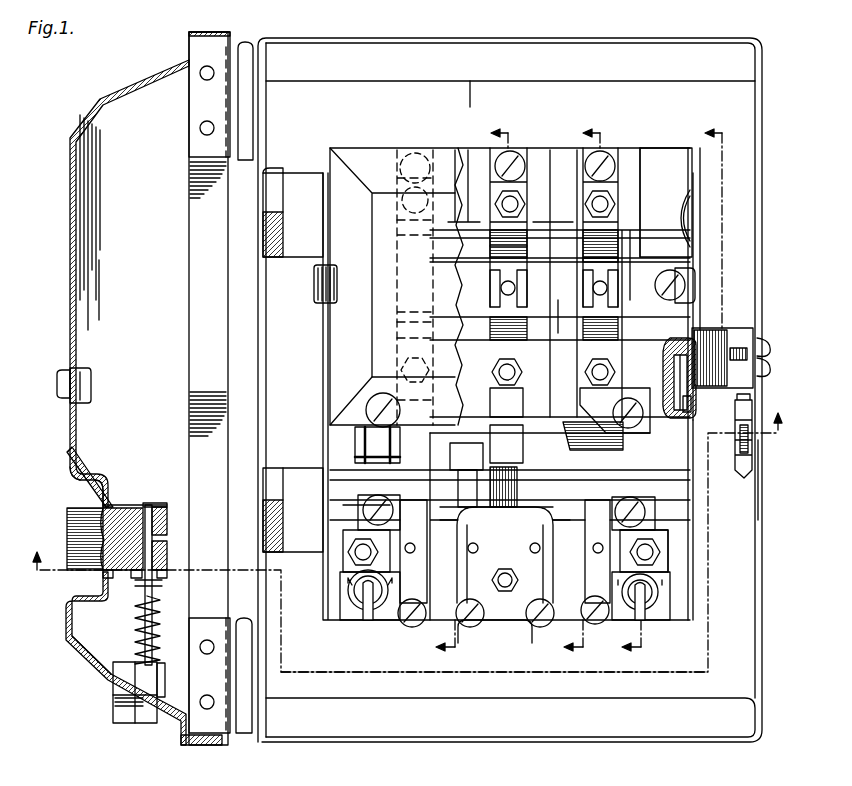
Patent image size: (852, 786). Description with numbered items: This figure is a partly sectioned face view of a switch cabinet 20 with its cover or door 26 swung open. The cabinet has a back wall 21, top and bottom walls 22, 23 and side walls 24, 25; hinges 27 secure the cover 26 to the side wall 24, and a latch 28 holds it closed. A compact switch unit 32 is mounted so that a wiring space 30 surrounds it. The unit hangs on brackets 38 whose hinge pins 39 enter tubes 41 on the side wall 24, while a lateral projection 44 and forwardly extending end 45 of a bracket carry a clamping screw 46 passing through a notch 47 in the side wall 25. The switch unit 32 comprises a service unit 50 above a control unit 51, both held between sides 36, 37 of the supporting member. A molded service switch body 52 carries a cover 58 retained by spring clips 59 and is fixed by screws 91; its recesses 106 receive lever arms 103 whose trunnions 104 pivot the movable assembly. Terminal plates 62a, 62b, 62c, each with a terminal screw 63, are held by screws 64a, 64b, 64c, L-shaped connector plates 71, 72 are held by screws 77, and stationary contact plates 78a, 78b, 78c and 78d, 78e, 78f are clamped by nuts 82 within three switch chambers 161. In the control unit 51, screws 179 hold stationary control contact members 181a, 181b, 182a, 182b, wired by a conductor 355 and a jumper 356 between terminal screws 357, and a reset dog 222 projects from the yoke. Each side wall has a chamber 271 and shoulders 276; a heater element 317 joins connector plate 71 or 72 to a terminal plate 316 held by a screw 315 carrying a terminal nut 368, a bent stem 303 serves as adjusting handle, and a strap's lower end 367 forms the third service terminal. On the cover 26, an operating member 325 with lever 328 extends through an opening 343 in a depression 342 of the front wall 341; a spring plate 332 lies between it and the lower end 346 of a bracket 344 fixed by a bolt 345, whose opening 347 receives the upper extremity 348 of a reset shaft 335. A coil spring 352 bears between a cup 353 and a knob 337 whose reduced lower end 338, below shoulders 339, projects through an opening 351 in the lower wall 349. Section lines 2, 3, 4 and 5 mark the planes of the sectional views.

The section line 2- 2 is at (409, 542).
The section line 3- 3 is at (672, 390).
The section line 4- 4 is at (583, 390).
The section line 5- 5 is at (472, 391).
The switch cabinet 20 is at (768, 563).
The back wall 21 is at (727, 652).
The top wall 22 is at (508, 40).
The bottom wall 23 is at (590, 740).
The side wall 24 is at (258, 382).
The side wall 25 is at (752, 477).
The cover 26 is at (145, 75).
The hinges 27 is at (252, 103).
The latch 28 is at (741, 414).
The space 30 is at (470, 107).
The switch unit 32 is at (694, 235).
The side 36 is at (325, 350).
The side 37 is at (693, 249).
The brackets 38 is at (298, 183).
The hinge pins 39 is at (280, 223).
The tubes 41 is at (283, 250).
The lateral projection 44 is at (730, 338).
The forwardly extending end 45 is at (752, 332).
The clamping screw 46 is at (766, 345).
The notch 47 is at (766, 377).
The service unit 50 is at (652, 162).
The control unit 51 is at (698, 518).
The service switch body 52 is at (677, 170).
The molded cover 58 is at (362, 160).
The spring clips 59 is at (745, 263).
The terminal plate 62a is at (405, 150).
The terminal plate 62b is at (512, 150).
The terminal plate 62c is at (610, 155).
The terminal screw 63 is at (497, 158).
The screw 64a is at (415, 158).
The screw 64b is at (524, 198).
The screw 64c is at (600, 190).
The L-shaped connector plate 71 is at (395, 385).
The L-shaped connector plate 72 is at (607, 403).
The screws 77 is at (616, 351).
The stationary contact plate 78a is at (408, 220).
The stationary contact plate 78b is at (500, 246).
The stationary contact plate 78c is at (622, 240).
The stationary contact plate 78d is at (408, 322).
The stationary contact plate 78e is at (440, 337).
The stationary contact plate 78f is at (602, 325).
The clamping nuts 82 is at (618, 201).
The screws 91 is at (661, 287).
The lever arms 103 is at (680, 340).
The trunnions 104 is at (675, 382).
The recesses 106 is at (687, 404).
The switch chambers 161 is at (623, 259).
The screws 179 is at (530, 548).
The stationary control contact member 181a is at (410, 582).
The stationary control contact member 181b is at (473, 573).
The stationary control contact member 182a is at (538, 578).
The stationary control contact member 182b is at (608, 598).
The reset dog 222 is at (512, 473).
The chamber 271 is at (358, 442).
The shoulders 276 is at (668, 620).
The stem 303 is at (365, 610).
The screw 315 is at (655, 575).
The terminal plate 316 is at (350, 536).
The heater element 317 is at (373, 473).
The control switch operating member 325 is at (107, 493).
The lever 328 is at (68, 528).
The spring plate 332 is at (167, 508).
The reset shaft 335 is at (160, 602).
The knob 337 is at (134, 673).
The reduced lower end 338 is at (125, 708).
The shoulders 339 is at (143, 698).
The front wall 341 is at (75, 292).
The depression 342 is at (67, 481).
The opening 343 is at (102, 507).
The bracket 344 is at (83, 453).
The bolt 345 is at (92, 387).
The lower end 346 is at (118, 482).
The opening 347 is at (165, 505).
The upper extremity 348 is at (150, 504).
The lower wall 349 is at (80, 668).
The opening 351 is at (107, 682).
The coil spring 352 is at (140, 641).
The cup 353 is at (165, 573).
The conductor 355 is at (160, 555).
The jumper 356 is at (513, 642).
The terminal screws 357 is at (475, 642).
The lower end of strap 367 is at (502, 612).
The terminal nuts 368 is at (658, 552).